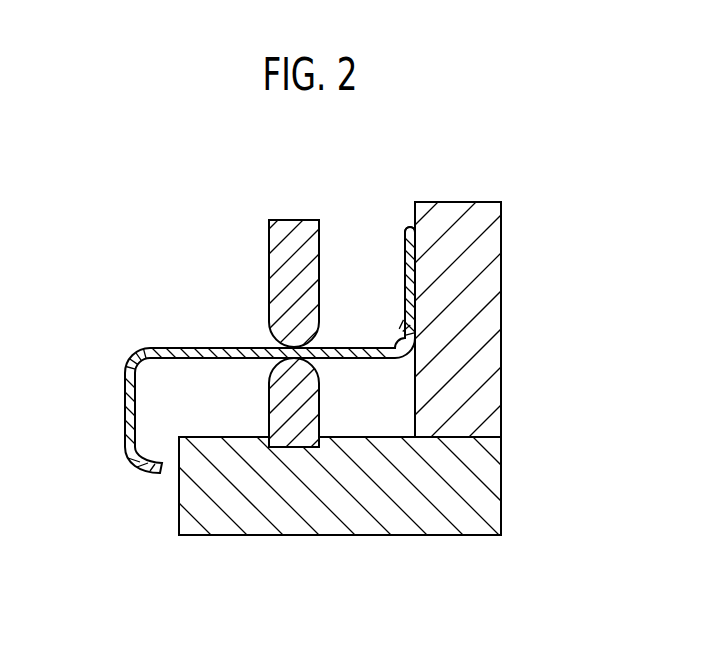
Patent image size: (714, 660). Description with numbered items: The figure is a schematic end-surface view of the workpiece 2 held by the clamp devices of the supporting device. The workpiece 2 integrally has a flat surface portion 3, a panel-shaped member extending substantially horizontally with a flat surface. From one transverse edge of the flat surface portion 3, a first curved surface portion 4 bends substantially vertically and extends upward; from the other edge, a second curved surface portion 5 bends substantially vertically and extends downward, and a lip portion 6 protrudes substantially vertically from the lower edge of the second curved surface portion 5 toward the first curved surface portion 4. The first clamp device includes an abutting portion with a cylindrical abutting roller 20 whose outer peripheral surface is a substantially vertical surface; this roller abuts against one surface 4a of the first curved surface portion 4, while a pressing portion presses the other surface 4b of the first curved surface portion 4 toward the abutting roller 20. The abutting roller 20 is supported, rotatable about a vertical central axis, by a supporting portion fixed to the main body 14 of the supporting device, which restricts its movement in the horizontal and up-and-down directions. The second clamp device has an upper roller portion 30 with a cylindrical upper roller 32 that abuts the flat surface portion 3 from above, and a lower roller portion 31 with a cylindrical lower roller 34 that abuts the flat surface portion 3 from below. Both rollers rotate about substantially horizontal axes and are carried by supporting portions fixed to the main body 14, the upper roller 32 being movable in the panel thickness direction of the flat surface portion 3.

The workpiece 2 is at (251, 350).
The flat surface portion 3 is at (352, 347).
The first curved surface portion 4 is at (408, 228).
The one surface of the first curved surface portion 4a is at (418, 243).
The other surface of the first curved surface portion 4b is at (405, 265).
The second curved surface portion 5 is at (125, 440).
The lip portion 6 is at (148, 478).
The main body 14 is at (405, 535).
The abutting roller 20 is at (501, 300).
The upper roller portion 30 is at (289, 230).
The lower roller portion 31 is at (287, 402).
The upper roller 32 is at (269, 228).
The lower roller 34 is at (269, 392).